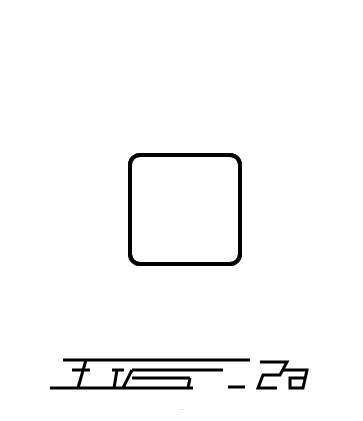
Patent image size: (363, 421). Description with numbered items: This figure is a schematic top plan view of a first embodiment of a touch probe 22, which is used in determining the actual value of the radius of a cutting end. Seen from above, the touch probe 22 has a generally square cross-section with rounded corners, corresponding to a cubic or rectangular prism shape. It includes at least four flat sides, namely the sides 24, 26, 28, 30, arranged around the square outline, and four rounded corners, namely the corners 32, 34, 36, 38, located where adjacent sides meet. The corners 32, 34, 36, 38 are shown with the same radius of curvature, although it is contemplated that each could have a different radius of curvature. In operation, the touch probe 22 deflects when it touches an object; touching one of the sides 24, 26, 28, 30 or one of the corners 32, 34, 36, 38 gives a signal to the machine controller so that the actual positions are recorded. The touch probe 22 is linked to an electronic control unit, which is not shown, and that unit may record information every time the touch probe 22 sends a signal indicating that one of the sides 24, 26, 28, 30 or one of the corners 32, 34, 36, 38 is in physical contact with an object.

The touch probe 22 is at (228, 125).
The side 24 is at (184, 152).
The side 26 is at (243, 210).
The side 28 is at (184, 267).
The side 30 is at (127, 211).
The corner 32 is at (243, 153).
The corner 34 is at (243, 267).
The corner 36 is at (127, 267).
The corner 38 is at (127, 153).